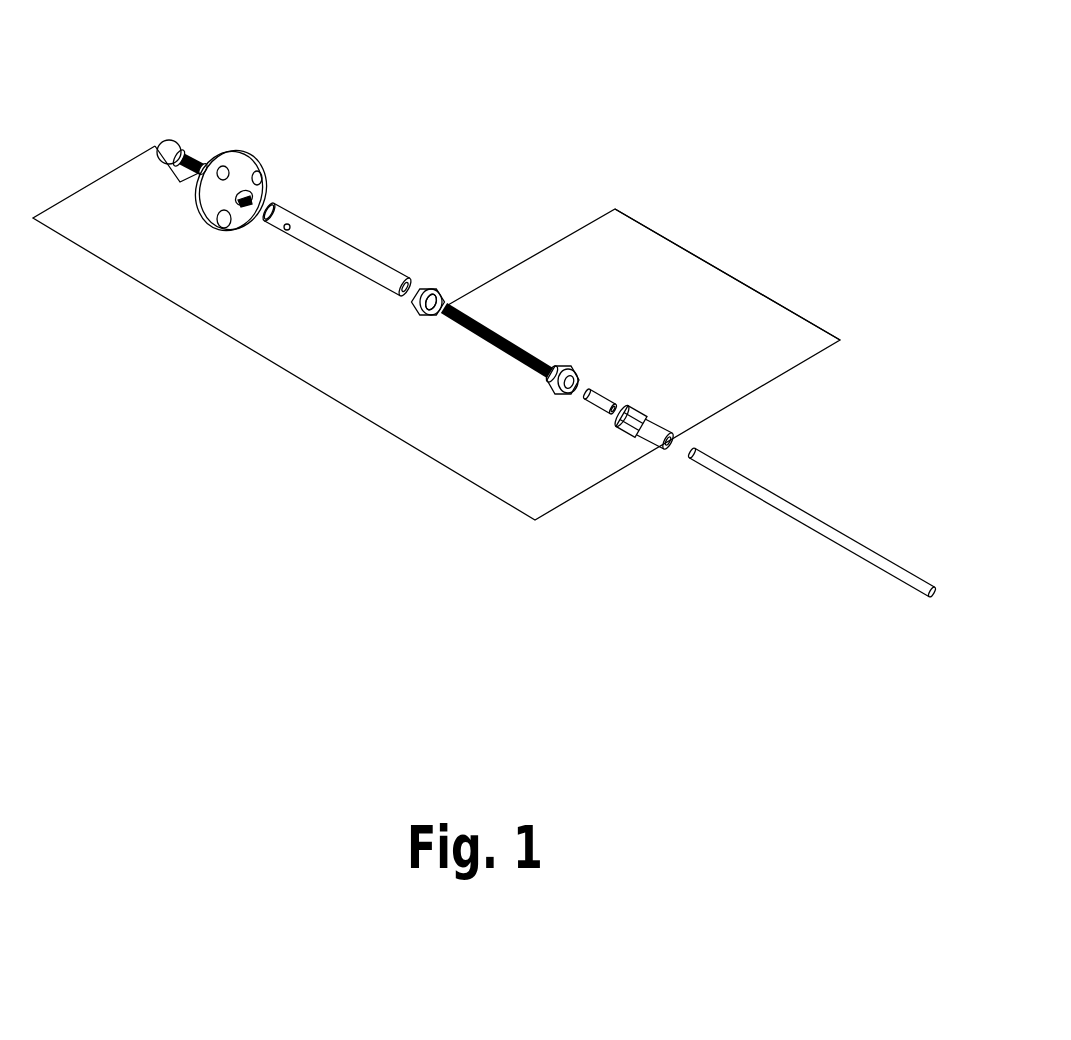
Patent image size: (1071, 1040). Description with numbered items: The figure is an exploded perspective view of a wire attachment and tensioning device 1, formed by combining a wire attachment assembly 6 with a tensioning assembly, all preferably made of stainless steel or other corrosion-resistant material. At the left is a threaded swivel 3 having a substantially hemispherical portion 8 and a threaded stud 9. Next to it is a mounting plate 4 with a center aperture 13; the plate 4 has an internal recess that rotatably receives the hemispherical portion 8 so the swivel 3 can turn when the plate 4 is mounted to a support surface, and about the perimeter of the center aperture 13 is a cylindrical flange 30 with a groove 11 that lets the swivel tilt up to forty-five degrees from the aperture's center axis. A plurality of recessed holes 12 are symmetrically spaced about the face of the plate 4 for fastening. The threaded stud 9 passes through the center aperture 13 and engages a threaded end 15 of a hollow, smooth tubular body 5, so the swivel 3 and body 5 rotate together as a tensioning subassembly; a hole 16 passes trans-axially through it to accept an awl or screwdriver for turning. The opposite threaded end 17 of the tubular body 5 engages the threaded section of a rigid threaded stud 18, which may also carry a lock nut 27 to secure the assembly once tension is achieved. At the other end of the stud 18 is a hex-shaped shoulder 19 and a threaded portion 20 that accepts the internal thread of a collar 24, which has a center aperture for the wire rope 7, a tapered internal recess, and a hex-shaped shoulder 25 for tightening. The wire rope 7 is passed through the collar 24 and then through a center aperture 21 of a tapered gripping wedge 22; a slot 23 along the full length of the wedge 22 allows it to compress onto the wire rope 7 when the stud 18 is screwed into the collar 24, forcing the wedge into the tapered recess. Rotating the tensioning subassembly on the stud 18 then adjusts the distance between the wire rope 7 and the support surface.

The wire attachment and tensioning device 1 is at (262, 357).
The threaded swivel 3 is at (150, 164).
The mounting plate 4 is at (260, 155).
The tubular body 5 is at (340, 238).
The wire attachment assembly 6 is at (693, 253).
The wire rope 7 is at (763, 488).
The hemispherical portion 8 is at (171, 140).
The threaded stud 9 is at (195, 150).
The groove 11 is at (228, 218).
The recessed holes 12 is at (260, 170).
The center aperture 13 is at (243, 212).
The threaded end 15 is at (268, 191).
The hole 16 is at (287, 231).
The threaded end 17 is at (415, 283).
The threaded stud 18 is at (460, 323).
The shoulder 19 is at (552, 380).
The threaded portion 20 is at (565, 387).
The center aperture 21 is at (618, 402).
The gripping wedge 22 is at (588, 385).
The slot 23 is at (592, 397).
The collar 24 is at (647, 428).
The hex-shaped shoulder 25 is at (645, 408).
The lock nut 27 is at (445, 290).
The cylindrical flange 30 is at (240, 190).